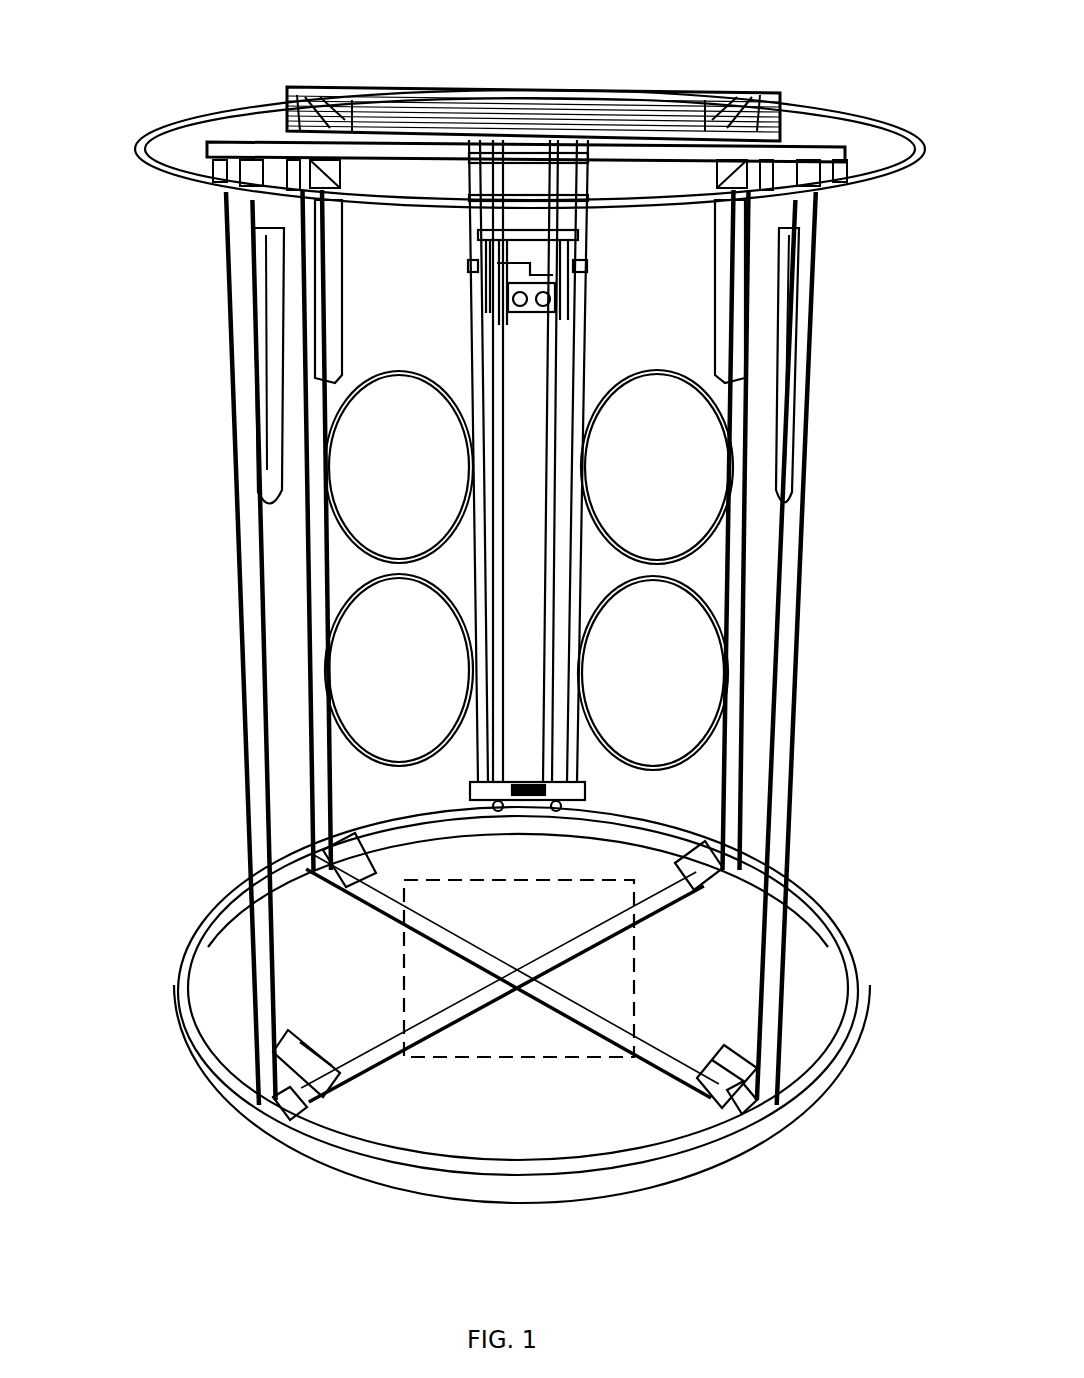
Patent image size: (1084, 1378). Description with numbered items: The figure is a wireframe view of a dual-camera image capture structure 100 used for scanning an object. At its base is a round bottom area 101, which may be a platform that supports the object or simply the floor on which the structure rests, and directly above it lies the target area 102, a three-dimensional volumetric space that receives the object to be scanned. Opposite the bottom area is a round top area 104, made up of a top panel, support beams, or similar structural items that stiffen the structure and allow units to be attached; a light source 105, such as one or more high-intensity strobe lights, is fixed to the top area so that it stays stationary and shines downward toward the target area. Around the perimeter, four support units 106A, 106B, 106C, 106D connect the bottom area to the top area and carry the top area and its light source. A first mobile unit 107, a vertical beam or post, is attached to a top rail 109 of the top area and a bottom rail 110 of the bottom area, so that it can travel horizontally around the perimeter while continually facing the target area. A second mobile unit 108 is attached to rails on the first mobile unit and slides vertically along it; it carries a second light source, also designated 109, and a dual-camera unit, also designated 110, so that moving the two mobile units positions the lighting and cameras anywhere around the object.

The dual-camera image capture structure 100 is at (96, 105).
The bottom area 101 is at (415, 1127).
The target area 102 is at (537, 942).
The top area 104 is at (520, 84).
The light source 105 is at (720, 120).
The support unit 106A is at (288, 537).
The support unit 106B is at (232, 686).
The support unit 106C is at (760, 546).
The support unit 106D is at (806, 686).
The first mobile unit 107 is at (468, 356).
The second mobile unit 108 is at (588, 293).
The top rail 109 is at (126, 156).
The bottom rail 110 is at (496, 298).